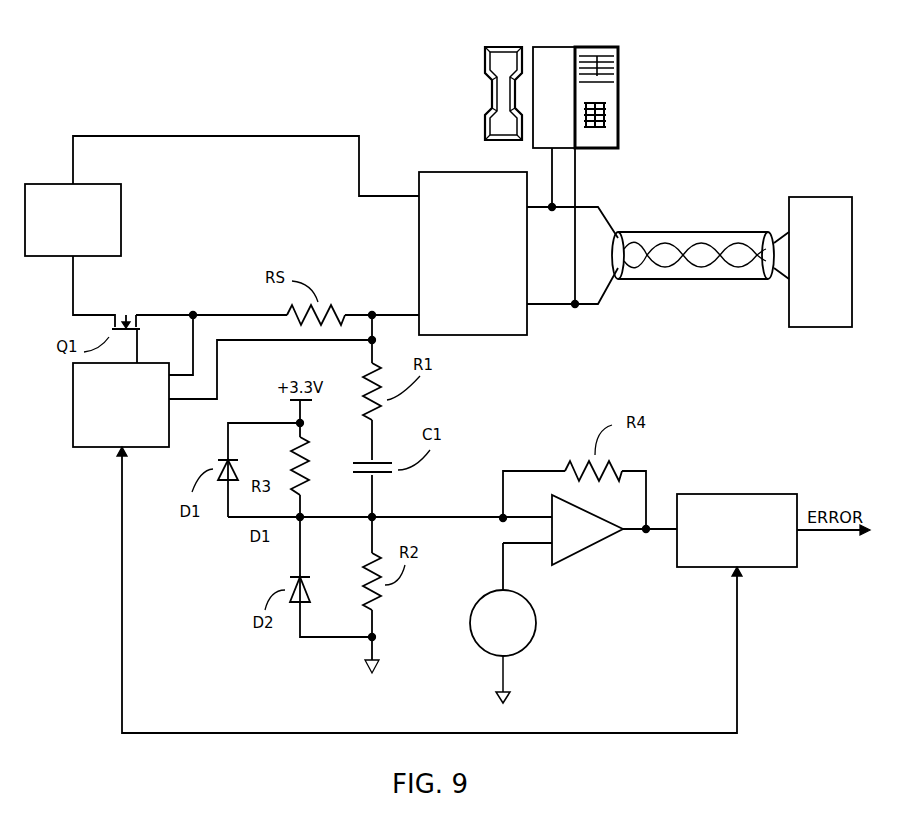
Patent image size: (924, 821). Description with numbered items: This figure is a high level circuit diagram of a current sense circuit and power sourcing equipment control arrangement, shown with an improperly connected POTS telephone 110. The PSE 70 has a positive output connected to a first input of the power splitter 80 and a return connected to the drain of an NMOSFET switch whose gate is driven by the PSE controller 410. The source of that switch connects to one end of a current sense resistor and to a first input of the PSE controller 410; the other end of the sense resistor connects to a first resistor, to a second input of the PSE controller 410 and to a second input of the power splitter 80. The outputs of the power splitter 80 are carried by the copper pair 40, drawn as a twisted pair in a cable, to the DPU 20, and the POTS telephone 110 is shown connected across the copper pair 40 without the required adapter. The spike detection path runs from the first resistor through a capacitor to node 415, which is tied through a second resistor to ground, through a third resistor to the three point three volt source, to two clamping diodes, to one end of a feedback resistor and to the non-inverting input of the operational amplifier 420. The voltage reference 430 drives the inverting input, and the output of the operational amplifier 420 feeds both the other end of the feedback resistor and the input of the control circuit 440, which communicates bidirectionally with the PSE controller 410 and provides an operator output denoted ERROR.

The DPU 20 is at (812, 328).
The copper pair 40 is at (695, 280).
The PSE 70 is at (122, 220).
The power splitter 80 is at (470, 336).
The POTS telephone 110 is at (575, 47).
The PSE controller 410 is at (73, 388).
The node 415 is at (376, 513).
The operational amplifier 420 is at (590, 545).
The voltage reference 430 is at (536, 623).
The control circuit 440 is at (741, 493).